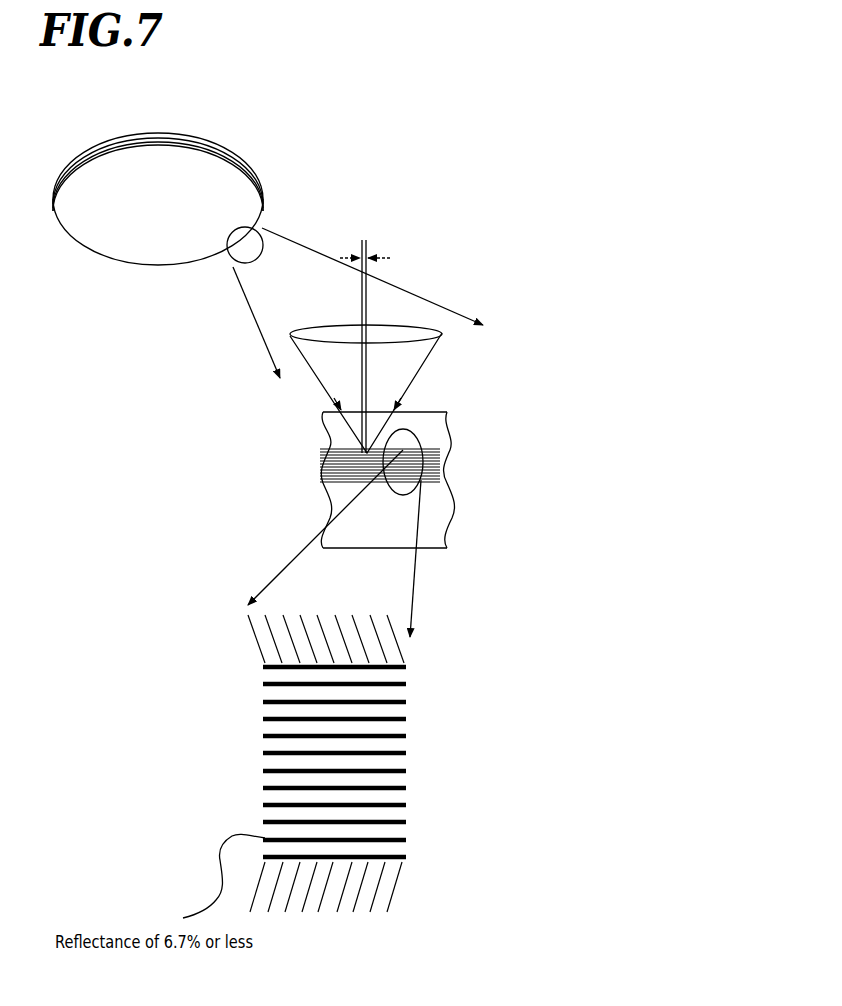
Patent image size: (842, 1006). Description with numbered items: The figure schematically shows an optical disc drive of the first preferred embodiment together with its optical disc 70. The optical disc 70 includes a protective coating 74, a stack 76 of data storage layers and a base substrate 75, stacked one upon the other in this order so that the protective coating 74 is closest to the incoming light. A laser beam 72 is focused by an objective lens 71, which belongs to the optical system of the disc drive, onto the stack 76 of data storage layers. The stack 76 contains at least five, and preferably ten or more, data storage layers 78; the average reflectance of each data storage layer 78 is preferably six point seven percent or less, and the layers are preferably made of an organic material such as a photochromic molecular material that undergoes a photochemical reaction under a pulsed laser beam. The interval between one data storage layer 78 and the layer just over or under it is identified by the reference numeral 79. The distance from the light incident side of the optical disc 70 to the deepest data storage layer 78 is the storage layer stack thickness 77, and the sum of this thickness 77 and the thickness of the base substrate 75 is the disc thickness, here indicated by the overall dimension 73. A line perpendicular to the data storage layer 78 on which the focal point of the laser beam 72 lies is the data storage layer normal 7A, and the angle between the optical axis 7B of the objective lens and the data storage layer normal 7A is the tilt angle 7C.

The optical disc 70 is at (193, 162).
The data storage layer normal 7A is at (380, 247).
The optical axis 7B is at (358, 250).
The tilt angle 7C is at (377, 260).
The objective lens 71 is at (448, 325).
The laser beam 72 is at (393, 377).
The disk layer stack 73 is at (463, 412).
The protective coating 74 is at (478, 393).
The base substrate 75 is at (478, 483).
The stack of data storage layers 76 is at (281, 410).
The storage layer stack thickness 77 is at (463, 483).
The data storage layer 78 is at (410, 667).
The interval between data storage layers 79 is at (231, 685).